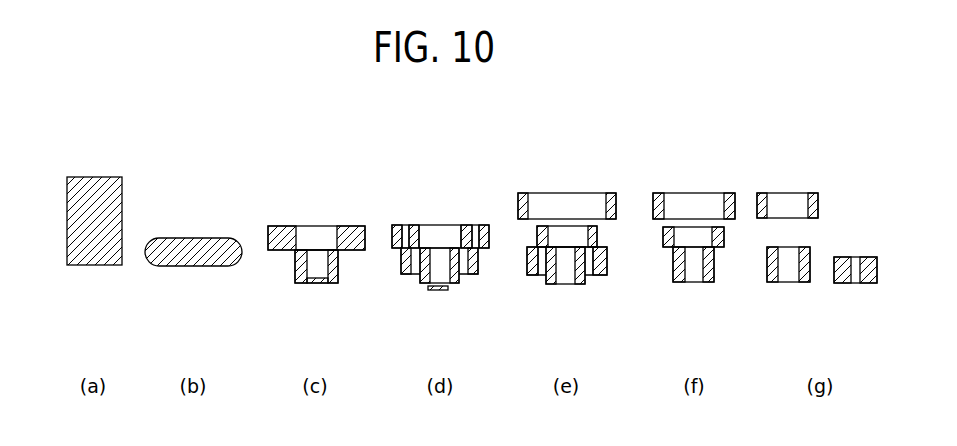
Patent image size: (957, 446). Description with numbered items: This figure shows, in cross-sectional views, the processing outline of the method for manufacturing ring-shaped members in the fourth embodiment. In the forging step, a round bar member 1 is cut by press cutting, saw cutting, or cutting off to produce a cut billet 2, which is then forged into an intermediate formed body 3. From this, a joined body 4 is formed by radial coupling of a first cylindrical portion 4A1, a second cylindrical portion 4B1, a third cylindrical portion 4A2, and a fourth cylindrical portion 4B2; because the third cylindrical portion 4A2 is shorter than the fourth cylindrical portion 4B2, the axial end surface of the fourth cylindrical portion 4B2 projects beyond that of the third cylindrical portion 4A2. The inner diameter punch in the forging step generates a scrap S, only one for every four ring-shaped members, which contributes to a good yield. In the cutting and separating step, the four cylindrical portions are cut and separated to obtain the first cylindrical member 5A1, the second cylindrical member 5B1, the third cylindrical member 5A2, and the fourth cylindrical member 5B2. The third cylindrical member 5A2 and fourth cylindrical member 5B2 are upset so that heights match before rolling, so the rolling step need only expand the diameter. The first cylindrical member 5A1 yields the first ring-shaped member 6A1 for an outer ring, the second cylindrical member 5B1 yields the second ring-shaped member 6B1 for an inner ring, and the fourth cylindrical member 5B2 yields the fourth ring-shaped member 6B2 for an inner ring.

The round bar member 1 is at (103, 265).
The cut billet 2 is at (215, 266).
The intermediate formed body 3 is at (285, 223).
The joined body 4 is at (548, 253).
The first cylindrical portion 4A1 is at (395, 225).
The third cylindrical portion 4A2 is at (406, 274).
The second cylindrical portion 4B1 is at (467, 225).
The fourth cylindrical portion 4B2 is at (457, 287).
The scrap S is at (433, 292).
The first cylindrical member 5A1 is at (567, 178).
The first ring-shaped member 6A1 is at (523, 193).
The third cylindrical member 5A2 is at (655, 193).
The second cylindrical member 5B1 is at (776, 177).
The second ring-shaped member 6B1 is at (762, 193).
The fourth cylindrical member 5B2 is at (772, 282).
The fourth ring-shaped member 6B2 is at (842, 283).